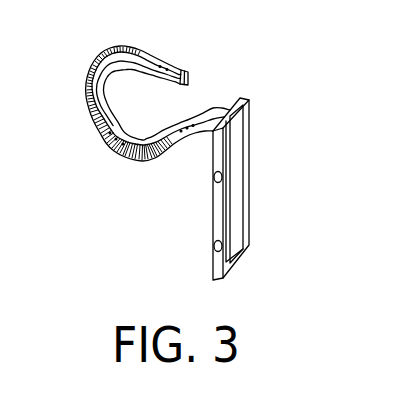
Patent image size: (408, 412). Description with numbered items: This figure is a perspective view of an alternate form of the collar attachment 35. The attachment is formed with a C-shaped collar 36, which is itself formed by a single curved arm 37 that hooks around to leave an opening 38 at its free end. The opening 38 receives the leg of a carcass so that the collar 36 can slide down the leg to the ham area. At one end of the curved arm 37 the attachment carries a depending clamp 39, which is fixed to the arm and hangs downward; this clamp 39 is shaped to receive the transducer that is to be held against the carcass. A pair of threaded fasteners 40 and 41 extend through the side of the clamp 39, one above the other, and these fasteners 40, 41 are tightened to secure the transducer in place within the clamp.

The collar attachment 35 is at (250, 89).
The C-shaped collar 36 is at (102, 55).
The curved arm 37 is at (103, 140).
The opening 38 is at (182, 98).
The depending clamp 39 is at (240, 165).
The threaded fastener 40 is at (216, 185).
The threaded fastener 41 is at (214, 247).